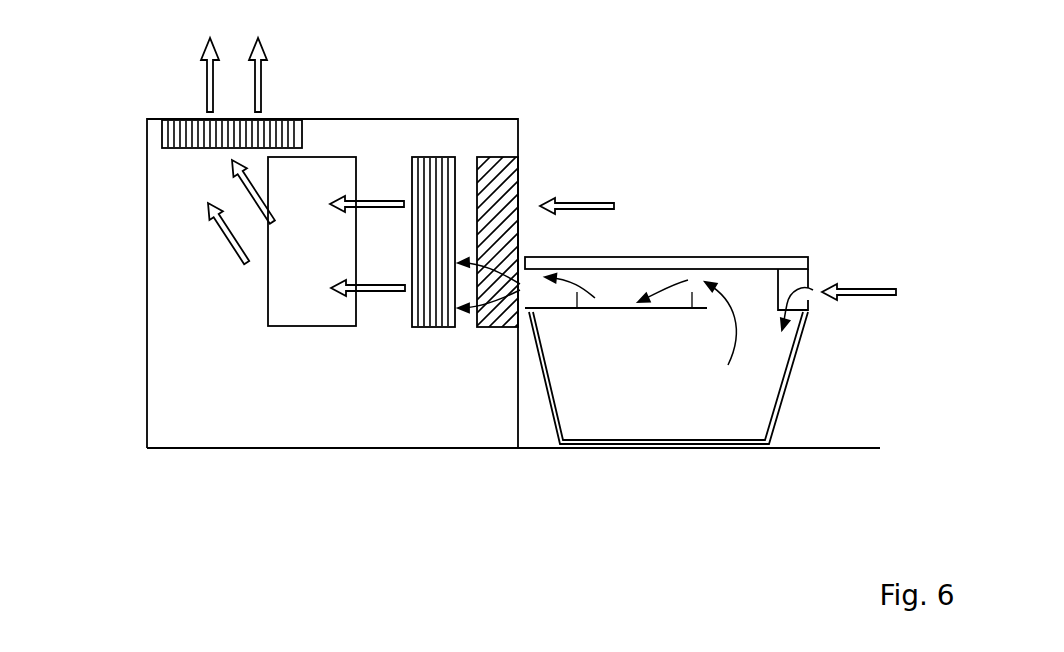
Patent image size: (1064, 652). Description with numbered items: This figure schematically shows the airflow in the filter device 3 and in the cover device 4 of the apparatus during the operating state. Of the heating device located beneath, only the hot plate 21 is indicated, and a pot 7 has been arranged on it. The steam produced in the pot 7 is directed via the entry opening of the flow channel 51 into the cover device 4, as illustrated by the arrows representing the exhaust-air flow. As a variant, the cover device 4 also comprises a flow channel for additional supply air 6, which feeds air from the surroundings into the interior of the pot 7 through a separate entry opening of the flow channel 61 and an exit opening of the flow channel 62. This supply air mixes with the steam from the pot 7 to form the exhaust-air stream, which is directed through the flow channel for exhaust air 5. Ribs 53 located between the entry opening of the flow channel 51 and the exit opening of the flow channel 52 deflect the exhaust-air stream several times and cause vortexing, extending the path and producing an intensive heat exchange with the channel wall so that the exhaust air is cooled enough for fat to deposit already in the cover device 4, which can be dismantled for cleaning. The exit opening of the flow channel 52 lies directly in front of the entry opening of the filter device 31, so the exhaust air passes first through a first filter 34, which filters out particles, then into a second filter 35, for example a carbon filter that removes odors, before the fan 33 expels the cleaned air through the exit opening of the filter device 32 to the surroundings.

The filter device 3 is at (147, 118).
The exit opening of the filter device 32 is at (280, 119).
The fan 33 is at (336, 241).
The second filter 35 is at (438, 157).
The first filter 34 is at (498, 157).
The entry opening of the filter device 31 is at (523, 207).
The exit opening of the flow channel 52 is at (525, 288).
The cover device 4 is at (680, 252).
The entry opening of the flow channel 51 is at (748, 310).
The ribs 53 is at (640, 285).
The flow channel for exhaust air 5 is at (592, 282).
The flow channel for additional supply air 6 is at (822, 273).
The entry opening of the flow channel 61 is at (812, 294).
The exit opening of the flow channel 62 is at (800, 310).
The pot 7 is at (767, 423).
The hot plate 21 is at (657, 450).